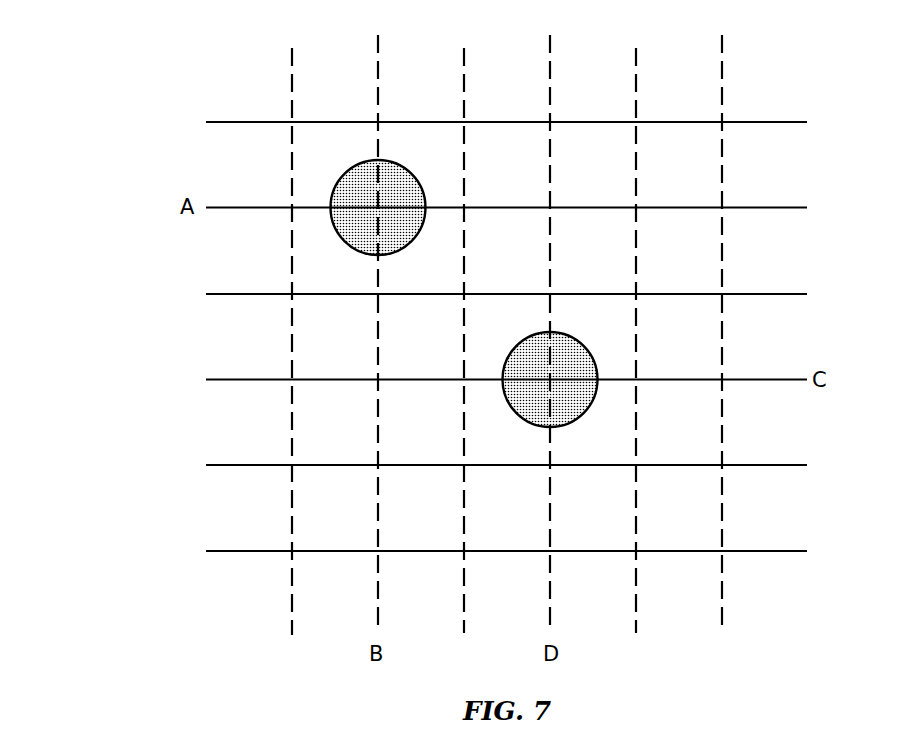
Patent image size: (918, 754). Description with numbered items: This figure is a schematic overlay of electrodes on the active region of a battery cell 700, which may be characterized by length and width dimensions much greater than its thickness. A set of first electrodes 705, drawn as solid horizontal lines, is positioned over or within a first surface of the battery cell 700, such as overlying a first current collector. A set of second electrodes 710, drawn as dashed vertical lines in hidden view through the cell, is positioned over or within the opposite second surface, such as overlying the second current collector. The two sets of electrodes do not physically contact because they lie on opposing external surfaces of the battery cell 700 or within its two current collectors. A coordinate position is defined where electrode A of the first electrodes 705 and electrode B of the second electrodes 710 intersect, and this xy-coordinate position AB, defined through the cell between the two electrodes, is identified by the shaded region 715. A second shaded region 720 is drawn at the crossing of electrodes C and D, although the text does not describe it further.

The battery cell 700 is at (98, 86).
The first electrodes 705 is at (218, 465).
The second electrodes 710 is at (292, 568).
The region 715 is at (331, 222).
The second intersection region at C-D 720 is at (594, 362).